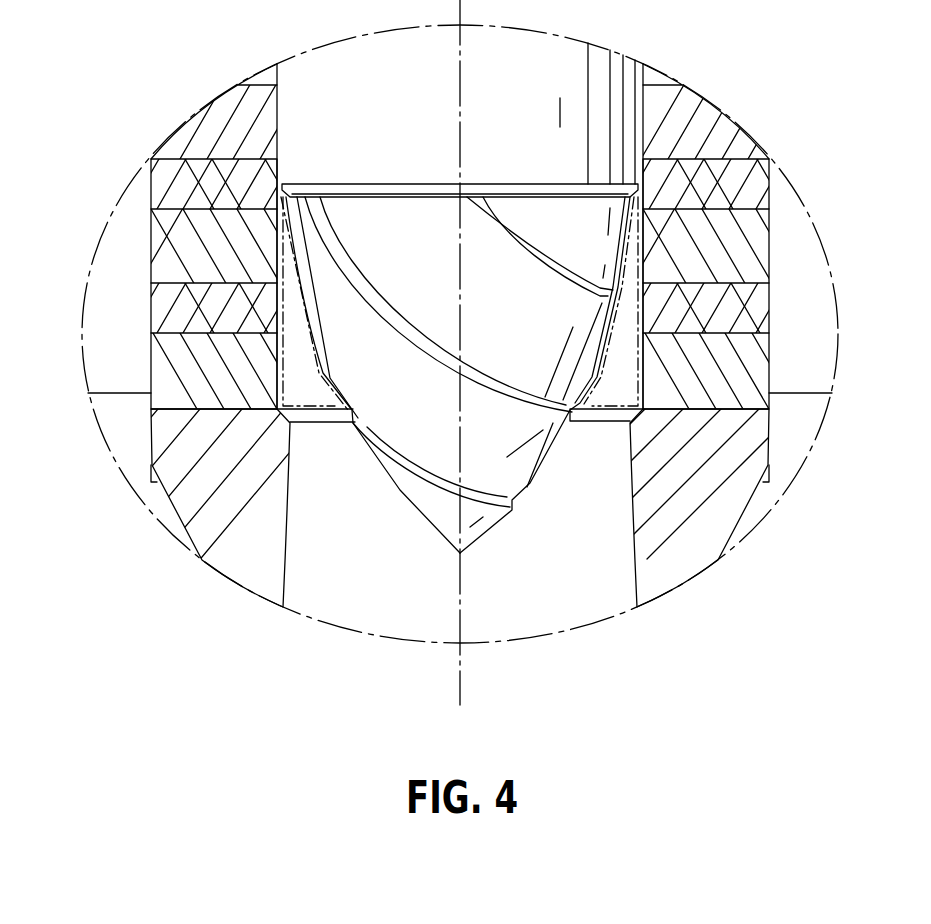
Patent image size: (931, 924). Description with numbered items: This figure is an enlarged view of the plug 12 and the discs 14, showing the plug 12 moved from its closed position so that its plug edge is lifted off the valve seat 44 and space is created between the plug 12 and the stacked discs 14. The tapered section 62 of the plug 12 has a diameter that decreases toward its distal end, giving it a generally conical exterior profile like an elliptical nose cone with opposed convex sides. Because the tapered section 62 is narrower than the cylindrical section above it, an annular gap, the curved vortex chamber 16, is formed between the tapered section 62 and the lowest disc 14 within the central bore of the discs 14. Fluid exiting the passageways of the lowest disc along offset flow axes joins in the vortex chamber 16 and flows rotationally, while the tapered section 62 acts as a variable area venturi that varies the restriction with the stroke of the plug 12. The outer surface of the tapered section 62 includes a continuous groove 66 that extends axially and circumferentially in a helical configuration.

The plug 12 is at (459, 327).
The discs 14 is at (181, 244).
The vortex chamber 16 is at (598, 408).
The valve seat 44 is at (320, 420).
The tapered section 62 is at (403, 438).
The groove 66 is at (447, 490).